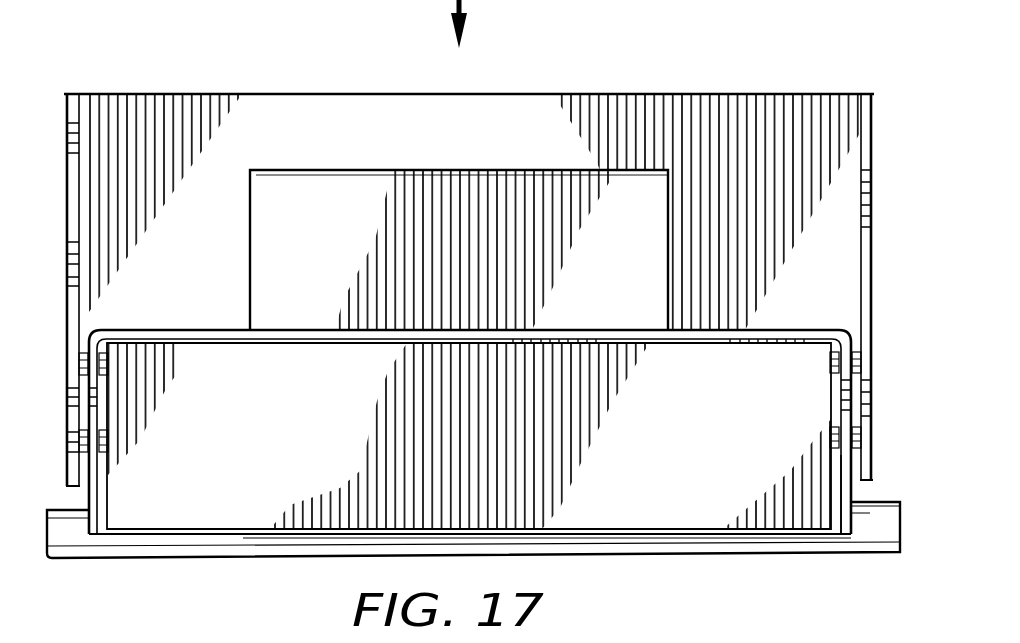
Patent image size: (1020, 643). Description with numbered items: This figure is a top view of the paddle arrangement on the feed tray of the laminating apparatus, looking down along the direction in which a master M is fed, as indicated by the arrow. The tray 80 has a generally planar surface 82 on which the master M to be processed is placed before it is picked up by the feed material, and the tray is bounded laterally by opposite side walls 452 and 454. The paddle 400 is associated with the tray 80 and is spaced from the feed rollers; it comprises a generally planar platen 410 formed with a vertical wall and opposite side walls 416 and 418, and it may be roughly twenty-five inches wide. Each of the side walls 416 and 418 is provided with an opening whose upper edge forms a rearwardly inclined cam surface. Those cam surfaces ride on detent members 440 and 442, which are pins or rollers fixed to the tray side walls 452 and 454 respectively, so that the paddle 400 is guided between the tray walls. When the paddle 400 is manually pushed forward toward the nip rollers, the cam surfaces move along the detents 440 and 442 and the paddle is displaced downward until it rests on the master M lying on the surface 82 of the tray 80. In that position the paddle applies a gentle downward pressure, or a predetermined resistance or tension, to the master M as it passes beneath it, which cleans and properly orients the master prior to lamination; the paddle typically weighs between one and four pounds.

The tray 80 is at (722, 116).
The planar surface 82 is at (255, 116).
The master M is at (388, 170).
The paddle 400 is at (190, 320).
The platen 410 is at (323, 430).
The side wall 416 is at (848, 472).
The side wall 418 is at (95, 480).
The detent member 440 is at (857, 426).
The detent member 442 is at (857, 352).
The side wall 452 is at (870, 213).
The side wall 454 is at (72, 303).